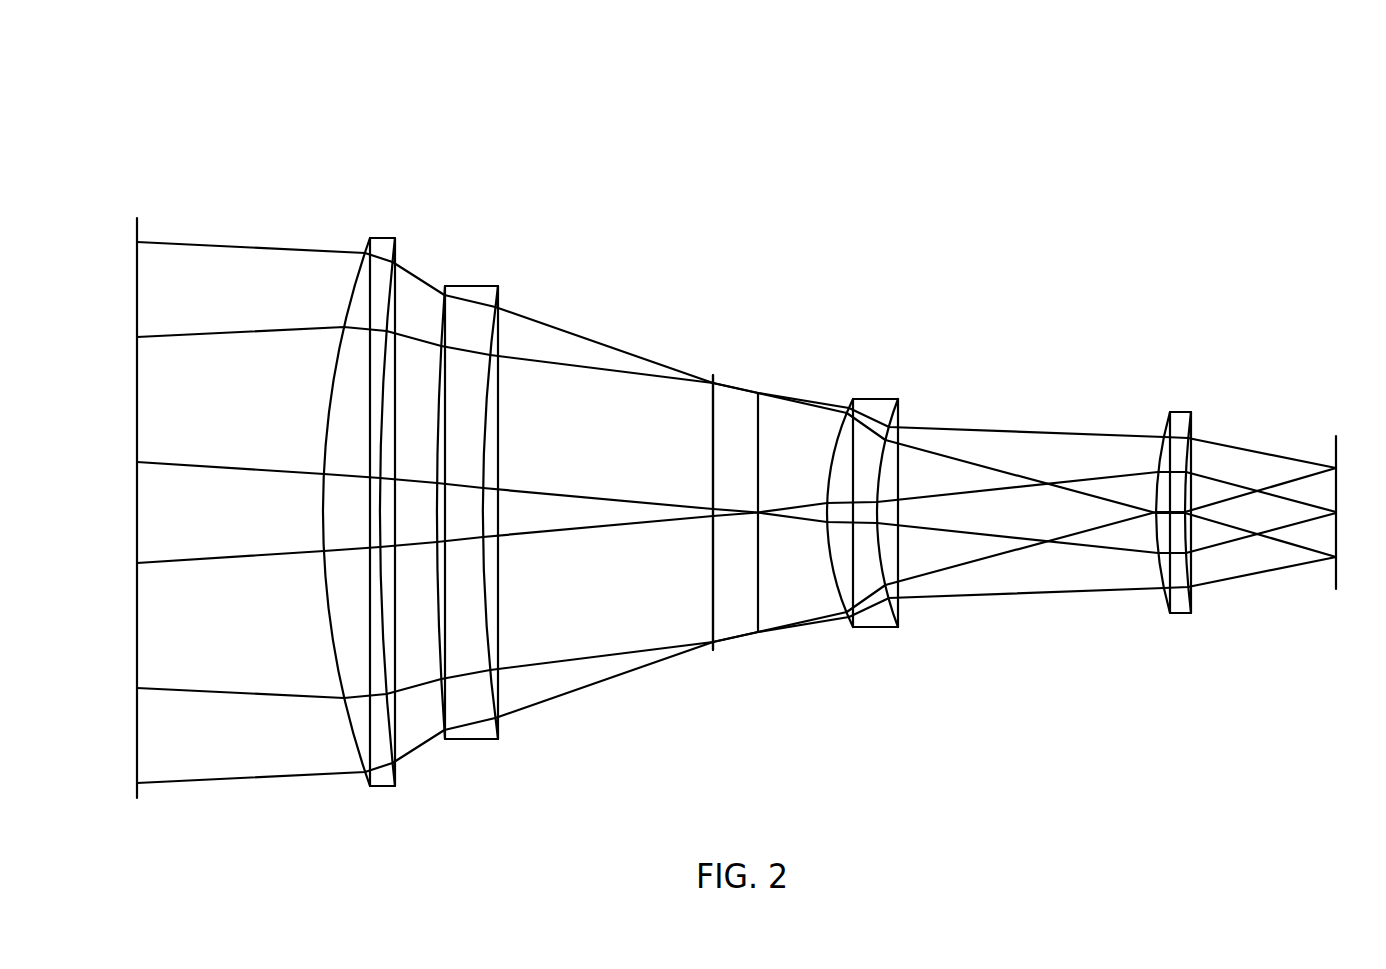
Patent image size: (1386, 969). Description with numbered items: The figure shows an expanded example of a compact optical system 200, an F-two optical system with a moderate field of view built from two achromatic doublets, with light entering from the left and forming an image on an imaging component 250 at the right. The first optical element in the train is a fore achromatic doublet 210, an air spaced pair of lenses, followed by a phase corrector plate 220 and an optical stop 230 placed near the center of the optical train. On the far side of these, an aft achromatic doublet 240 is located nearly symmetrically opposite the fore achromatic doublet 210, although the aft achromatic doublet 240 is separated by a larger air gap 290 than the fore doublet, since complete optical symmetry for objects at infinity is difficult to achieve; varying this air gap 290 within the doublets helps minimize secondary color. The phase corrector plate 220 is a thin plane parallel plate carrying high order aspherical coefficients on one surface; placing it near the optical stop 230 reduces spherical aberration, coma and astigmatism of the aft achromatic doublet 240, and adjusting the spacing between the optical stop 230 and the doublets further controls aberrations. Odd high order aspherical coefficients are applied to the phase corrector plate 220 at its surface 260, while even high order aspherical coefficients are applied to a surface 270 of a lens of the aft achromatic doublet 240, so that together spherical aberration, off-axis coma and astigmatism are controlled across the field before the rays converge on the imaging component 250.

The compact optical system 200 is at (234, 78).
The fore achromatic doublet 210 is at (323, 198).
The phase corrector plate 220 is at (709, 344).
The optical stop 230 is at (756, 658).
The aft achromatic doublet 240 is at (848, 670).
The imaging component 250 is at (1328, 410).
The surface 260 is at (699, 561).
The surface 270 is at (1156, 411).
The air gap 290 is at (965, 410).